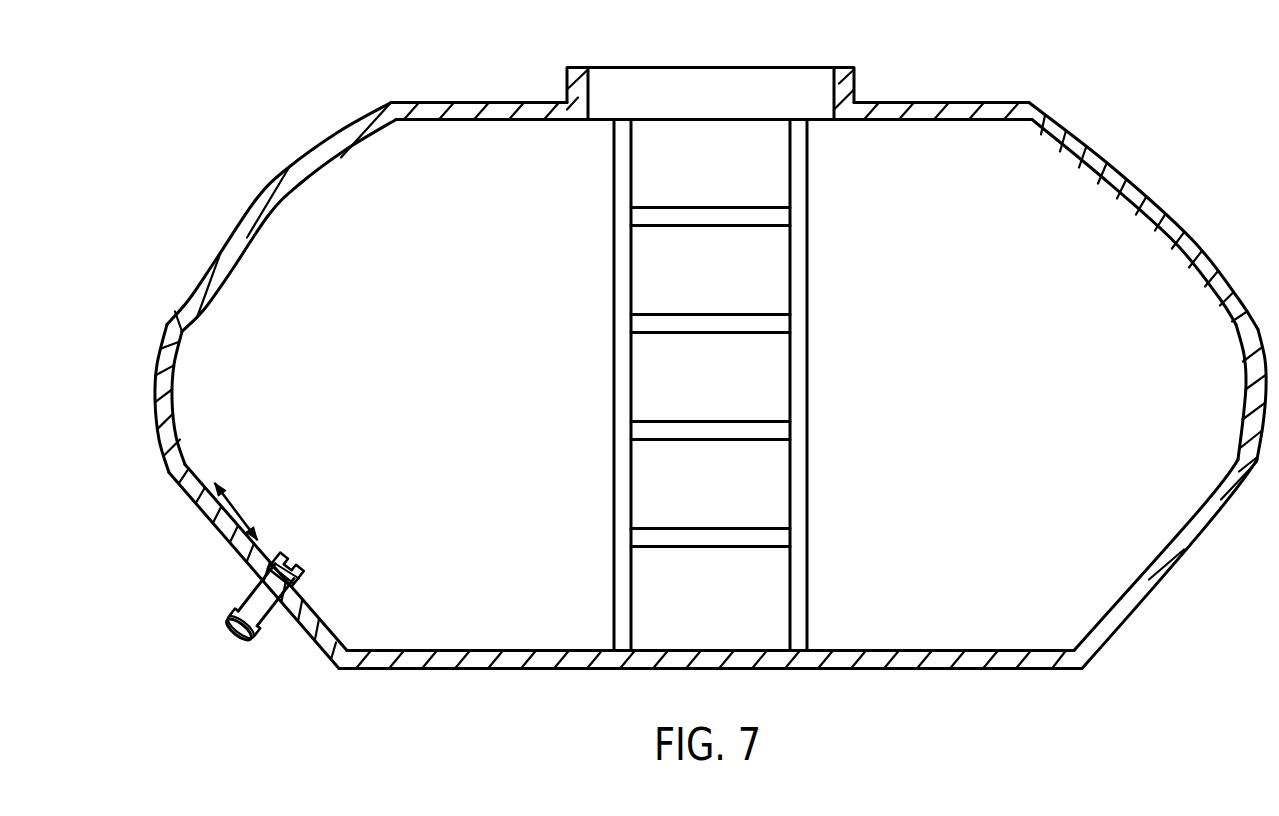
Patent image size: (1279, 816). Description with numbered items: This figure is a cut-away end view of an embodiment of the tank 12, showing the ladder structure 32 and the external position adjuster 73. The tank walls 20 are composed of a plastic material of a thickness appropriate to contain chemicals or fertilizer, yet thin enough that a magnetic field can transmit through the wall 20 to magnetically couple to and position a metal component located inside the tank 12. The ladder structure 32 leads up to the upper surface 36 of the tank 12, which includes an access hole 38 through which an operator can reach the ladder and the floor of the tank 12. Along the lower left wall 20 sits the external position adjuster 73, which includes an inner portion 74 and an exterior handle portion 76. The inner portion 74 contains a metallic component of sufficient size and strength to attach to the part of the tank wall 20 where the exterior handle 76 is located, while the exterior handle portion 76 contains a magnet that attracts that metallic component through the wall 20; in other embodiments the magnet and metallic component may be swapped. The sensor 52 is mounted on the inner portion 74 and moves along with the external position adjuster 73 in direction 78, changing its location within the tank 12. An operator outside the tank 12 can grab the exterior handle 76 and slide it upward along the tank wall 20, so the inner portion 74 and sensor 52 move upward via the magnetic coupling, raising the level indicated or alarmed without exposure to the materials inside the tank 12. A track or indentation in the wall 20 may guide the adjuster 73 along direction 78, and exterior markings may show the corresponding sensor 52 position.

The tank 12 is at (1172, 194).
The tank walls 20 is at (192, 520).
The ladder structure 32 is at (811, 376).
The upper surface 36 is at (903, 103).
The access hole 38 is at (697, 92).
The sensor 52 is at (290, 558).
The external position adjuster 73 is at (232, 595).
The inner portion 74 is at (298, 598).
The exterior handle portion 76 is at (228, 641).
The direction 78 is at (240, 510).